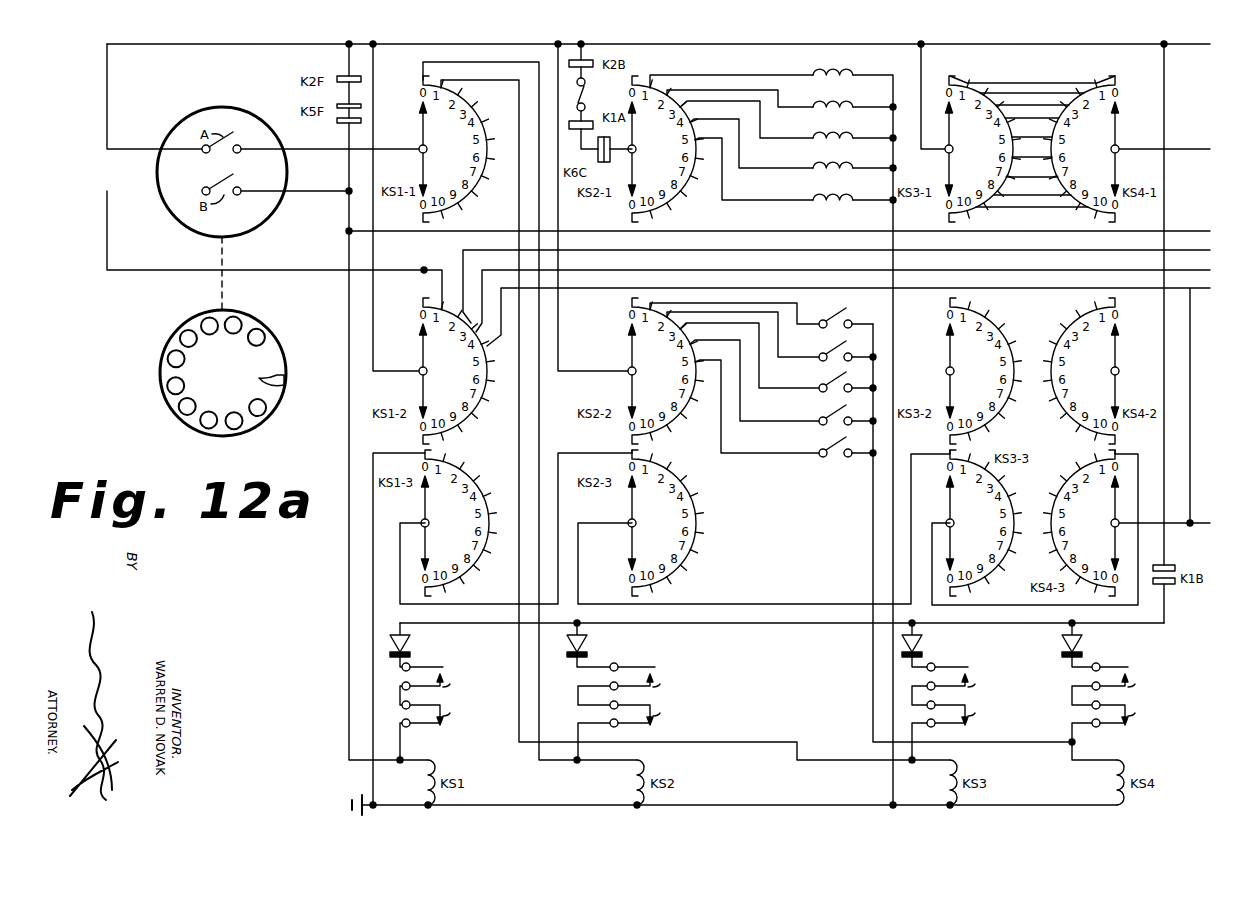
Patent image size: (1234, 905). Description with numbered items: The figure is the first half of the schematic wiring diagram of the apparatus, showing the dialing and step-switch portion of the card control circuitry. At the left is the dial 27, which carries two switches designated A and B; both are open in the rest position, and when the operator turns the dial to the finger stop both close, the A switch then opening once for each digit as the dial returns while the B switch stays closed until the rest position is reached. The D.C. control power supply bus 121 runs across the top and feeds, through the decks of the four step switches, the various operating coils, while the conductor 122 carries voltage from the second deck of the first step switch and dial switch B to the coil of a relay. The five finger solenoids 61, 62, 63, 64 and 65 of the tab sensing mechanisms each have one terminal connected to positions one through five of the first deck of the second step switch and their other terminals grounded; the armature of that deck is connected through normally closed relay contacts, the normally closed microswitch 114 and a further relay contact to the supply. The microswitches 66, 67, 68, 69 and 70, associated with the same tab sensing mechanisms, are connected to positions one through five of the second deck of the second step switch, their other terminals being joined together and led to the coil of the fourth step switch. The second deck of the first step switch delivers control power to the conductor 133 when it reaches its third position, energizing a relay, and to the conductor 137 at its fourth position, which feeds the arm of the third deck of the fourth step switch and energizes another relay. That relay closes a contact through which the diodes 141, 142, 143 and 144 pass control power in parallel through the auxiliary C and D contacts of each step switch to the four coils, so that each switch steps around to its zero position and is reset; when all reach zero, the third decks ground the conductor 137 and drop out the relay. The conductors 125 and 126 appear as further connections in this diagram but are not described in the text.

The D.C. control power supply bus 121 is at (153, 44).
The conductor 122 is at (389, 235).
The conductor 125 is at (1196, 251).
The conductor 126 is at (1196, 149).
The conductor 133 is at (1196, 270).
The conductor 137 is at (1190, 279).
The dial 27 is at (271, 330).
The finger solenoid 61 is at (854, 69).
The finger solenoid 62 is at (854, 101).
The finger solenoid 63 is at (854, 132).
The finger solenoid 64 is at (854, 162).
The finger solenoid 65 is at (854, 194).
The microswitch 66 is at (833, 310).
The microswitch 67 is at (833, 343).
The microswitch 68 is at (833, 374).
The microswitch 69 is at (833, 407).
The microswitch 70 is at (833, 439).
The microswitch 114 is at (584, 103).
The diode 141 is at (1080, 641).
The diode 142 is at (920, 641).
The diode 143 is at (585, 641).
The diode 144 is at (408, 641).